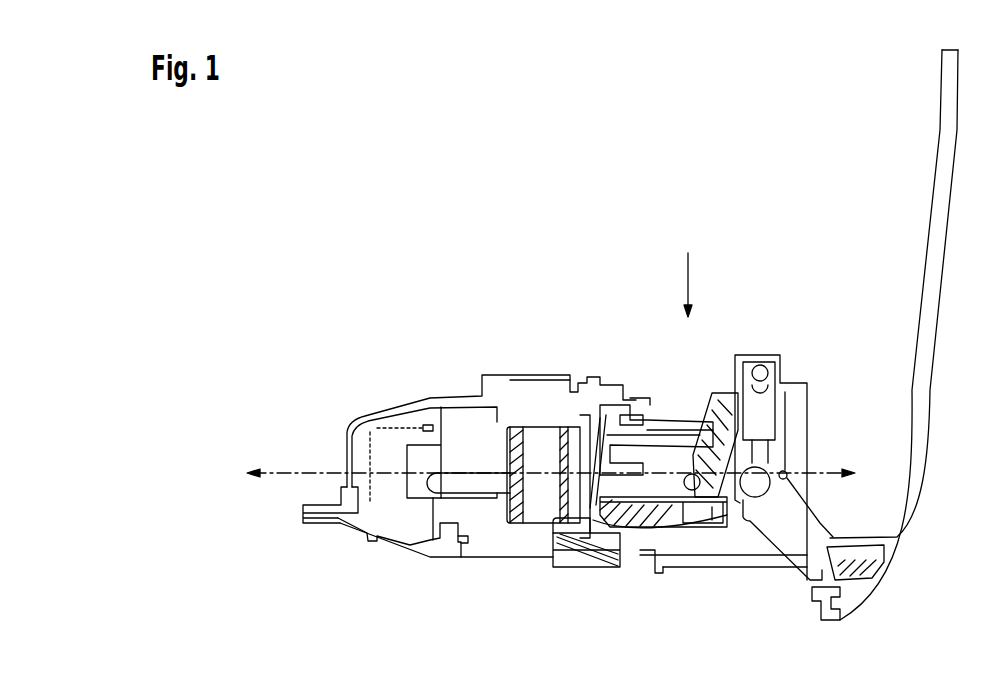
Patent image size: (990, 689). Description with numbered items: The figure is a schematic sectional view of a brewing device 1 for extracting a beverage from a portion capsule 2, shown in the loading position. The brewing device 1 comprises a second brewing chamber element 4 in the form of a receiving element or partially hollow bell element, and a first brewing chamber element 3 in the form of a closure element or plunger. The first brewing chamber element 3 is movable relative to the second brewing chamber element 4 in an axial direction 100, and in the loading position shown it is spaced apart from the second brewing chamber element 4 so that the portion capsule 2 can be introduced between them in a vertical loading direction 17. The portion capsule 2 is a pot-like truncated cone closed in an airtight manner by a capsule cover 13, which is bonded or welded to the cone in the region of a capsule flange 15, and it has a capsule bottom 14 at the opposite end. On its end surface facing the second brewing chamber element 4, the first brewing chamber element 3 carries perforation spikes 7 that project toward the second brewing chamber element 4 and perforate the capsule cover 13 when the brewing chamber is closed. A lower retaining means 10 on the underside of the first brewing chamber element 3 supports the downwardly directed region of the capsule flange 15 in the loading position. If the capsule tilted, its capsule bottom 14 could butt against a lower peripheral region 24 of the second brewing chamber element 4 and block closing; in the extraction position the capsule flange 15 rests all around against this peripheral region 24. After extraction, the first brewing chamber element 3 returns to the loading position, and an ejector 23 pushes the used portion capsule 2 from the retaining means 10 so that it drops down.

The brewing device 1 is at (375, 270).
The portion capsule 2 is at (540, 447).
The first brewing chamber element 3 is at (660, 460).
The second brewing chamber element 4 is at (413, 535).
The perforation spikes 7 is at (612, 396).
The lower retaining means 10 is at (606, 546).
The capsule cover 13 is at (568, 560).
The capsule bottom 14 is at (492, 490).
The capsule flange 15 is at (573, 395).
The loading direction 17 is at (690, 268).
The ejector 23 is at (572, 542).
The lower peripheral region 24 is at (459, 526).
The axial direction 100 is at (836, 468).